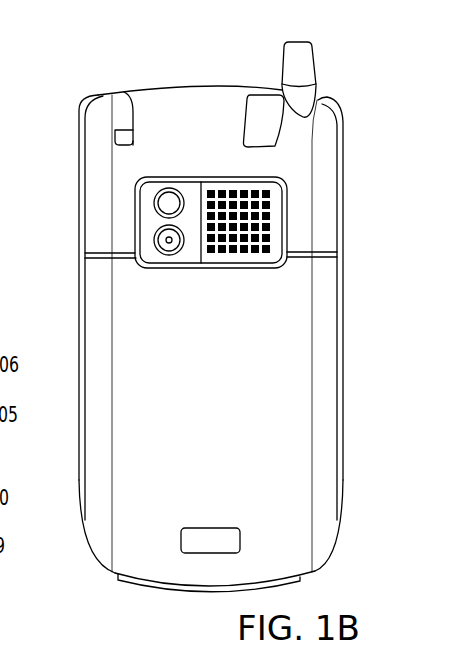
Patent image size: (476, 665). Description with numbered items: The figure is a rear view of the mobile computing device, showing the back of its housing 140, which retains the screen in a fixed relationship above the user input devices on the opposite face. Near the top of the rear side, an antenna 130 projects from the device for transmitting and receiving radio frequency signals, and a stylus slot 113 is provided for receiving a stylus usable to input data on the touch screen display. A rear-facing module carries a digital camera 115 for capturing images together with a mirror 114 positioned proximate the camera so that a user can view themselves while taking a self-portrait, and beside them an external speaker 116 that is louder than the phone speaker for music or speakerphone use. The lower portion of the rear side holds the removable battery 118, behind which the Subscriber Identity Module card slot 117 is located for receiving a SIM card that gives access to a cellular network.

The stylus slot 113 is at (107, 90).
The antenna 130 is at (273, 68).
The mirror 114 is at (150, 203).
The digital camera 115 is at (153, 258).
The external speaker 116 is at (283, 218).
The Subscriber Identity Module (SIM) card slot 117 is at (287, 487).
The removable battery 118 is at (208, 558).
The housing 140 is at (72, 565).